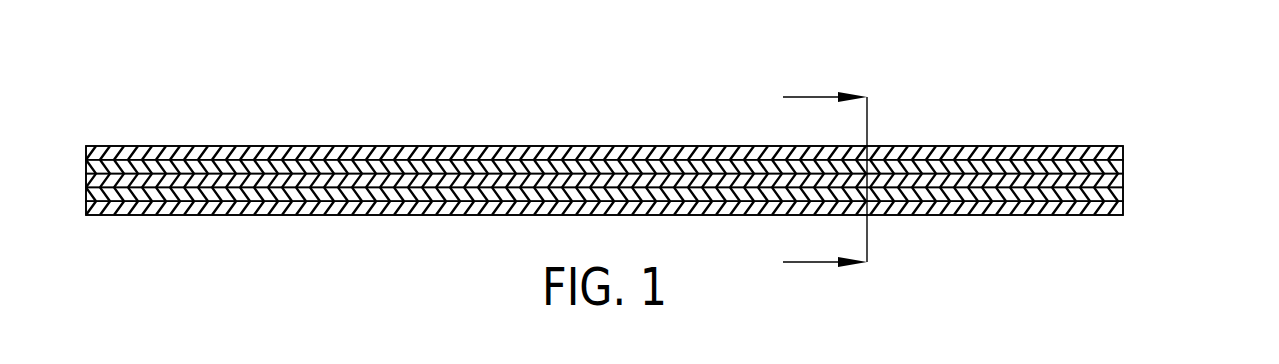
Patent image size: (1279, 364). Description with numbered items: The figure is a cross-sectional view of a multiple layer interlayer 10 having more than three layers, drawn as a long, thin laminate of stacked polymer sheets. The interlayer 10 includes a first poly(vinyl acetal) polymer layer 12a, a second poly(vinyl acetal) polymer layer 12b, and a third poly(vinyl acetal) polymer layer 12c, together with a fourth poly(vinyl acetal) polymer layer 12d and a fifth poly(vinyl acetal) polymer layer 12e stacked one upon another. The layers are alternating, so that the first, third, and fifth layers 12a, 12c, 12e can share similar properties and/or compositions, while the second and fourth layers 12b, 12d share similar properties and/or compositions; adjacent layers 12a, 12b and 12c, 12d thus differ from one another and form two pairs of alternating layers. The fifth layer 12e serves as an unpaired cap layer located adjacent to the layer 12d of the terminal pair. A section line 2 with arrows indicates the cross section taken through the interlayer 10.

The multiple layer interlayer 10 is at (1013, 98).
The first poly(vinyl acetal) polymer layer 12a is at (1123, 153).
The second poly(vinyl acetal) polymer layer 12b is at (1123, 167).
The third poly(vinyl acetal) polymer layer 12c is at (1123, 180).
The fourth poly(vinyl acetal) polymer layer 12d is at (1123, 194).
The fifth poly(vinyl acetal) polymer layer (cap layer) 12e is at (1123, 208).
The section line 2- 2 is at (845, 182).